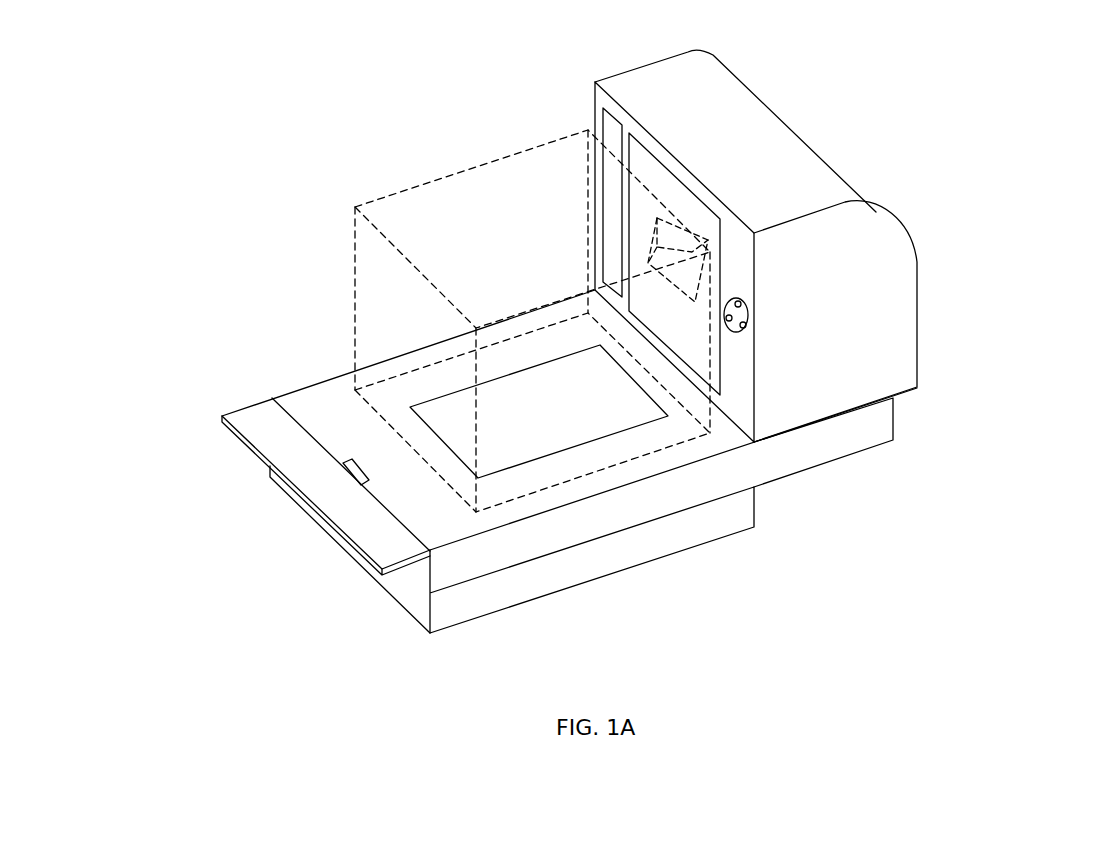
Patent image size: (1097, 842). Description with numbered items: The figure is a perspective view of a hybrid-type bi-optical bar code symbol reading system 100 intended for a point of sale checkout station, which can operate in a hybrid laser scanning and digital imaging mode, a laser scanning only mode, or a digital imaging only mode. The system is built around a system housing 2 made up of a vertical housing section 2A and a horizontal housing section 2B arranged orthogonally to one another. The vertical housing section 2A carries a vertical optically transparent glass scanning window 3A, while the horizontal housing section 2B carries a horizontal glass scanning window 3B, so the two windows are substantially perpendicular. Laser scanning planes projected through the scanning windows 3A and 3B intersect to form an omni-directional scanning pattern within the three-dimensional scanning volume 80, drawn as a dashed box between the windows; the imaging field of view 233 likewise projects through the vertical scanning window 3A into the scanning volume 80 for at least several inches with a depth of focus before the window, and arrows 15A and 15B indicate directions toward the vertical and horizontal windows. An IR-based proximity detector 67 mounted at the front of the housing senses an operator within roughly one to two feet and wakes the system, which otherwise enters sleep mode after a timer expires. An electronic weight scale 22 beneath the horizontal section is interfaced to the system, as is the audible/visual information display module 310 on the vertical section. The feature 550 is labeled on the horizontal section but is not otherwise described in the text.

The system housing 2 is at (1000, 380).
The vertical housing section 2A is at (727, 93).
The horizontal housing section 2B is at (650, 502).
The vertical scanning window 3A is at (685, 318).
The horizontal scanning window 3B is at (565, 422).
The camera view direction 15A is at (636, 236).
The camera view direction 15B is at (434, 402).
The electronic weight scale 22 is at (410, 593).
The IR-based proximity detector 67 is at (353, 460).
The 3D scanning volume 80 is at (353, 258).
The hybrid scanning/imaging system 100 is at (866, 600).
The field of view 233 is at (668, 228).
The audible/visual information display subsystem 310 is at (613, 197).
The light source 550 is at (518, 510).